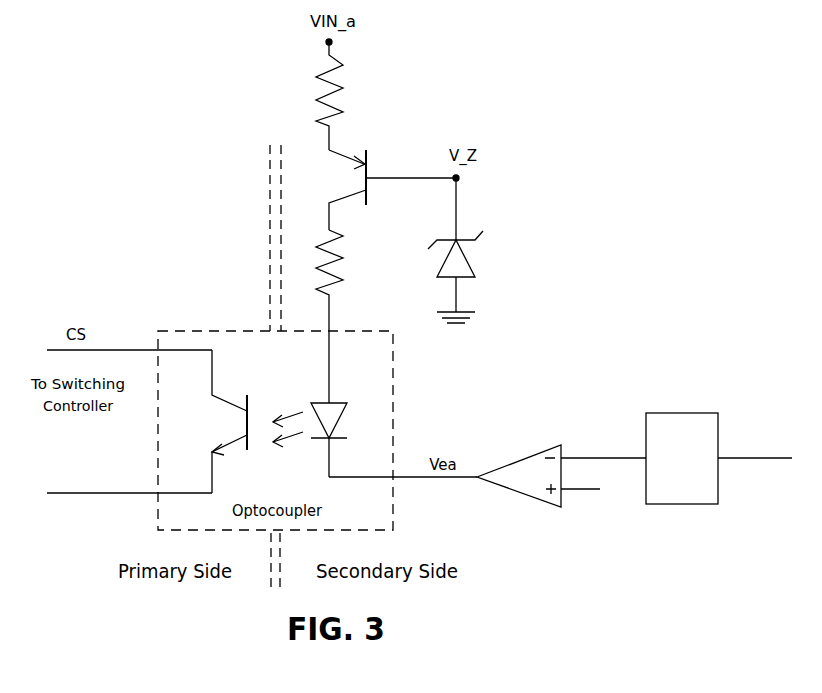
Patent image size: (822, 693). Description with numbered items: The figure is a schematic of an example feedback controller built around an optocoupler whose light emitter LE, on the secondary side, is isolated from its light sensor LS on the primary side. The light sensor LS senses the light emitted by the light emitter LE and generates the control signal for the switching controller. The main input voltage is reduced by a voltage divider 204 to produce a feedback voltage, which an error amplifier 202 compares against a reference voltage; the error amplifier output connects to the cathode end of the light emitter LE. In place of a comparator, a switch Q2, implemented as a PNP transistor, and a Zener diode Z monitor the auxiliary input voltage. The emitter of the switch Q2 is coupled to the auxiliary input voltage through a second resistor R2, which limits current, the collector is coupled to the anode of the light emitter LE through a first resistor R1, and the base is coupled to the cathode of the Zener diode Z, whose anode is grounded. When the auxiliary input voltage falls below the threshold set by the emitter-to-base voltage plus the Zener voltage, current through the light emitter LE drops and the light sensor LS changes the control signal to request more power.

The error amplifier 202 is at (526, 456).
The voltage divider 204 is at (668, 443).
The first resistor R1 is at (317, 316).
The second resistor R2 is at (317, 96).
The switch Q2 is at (376, 190).
The Zener diode Z is at (464, 250).
The light sensor LS is at (213, 421).
The light emitter LE is at (344, 440).